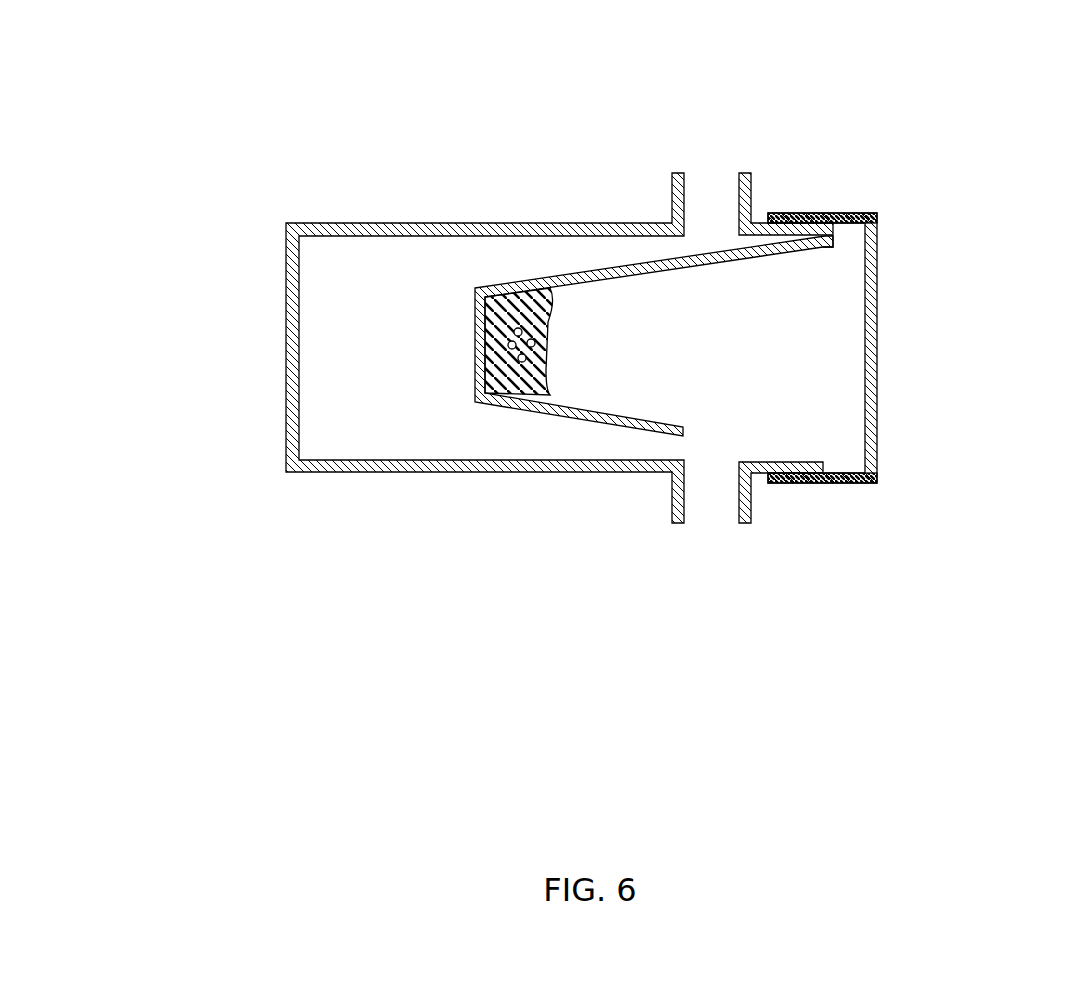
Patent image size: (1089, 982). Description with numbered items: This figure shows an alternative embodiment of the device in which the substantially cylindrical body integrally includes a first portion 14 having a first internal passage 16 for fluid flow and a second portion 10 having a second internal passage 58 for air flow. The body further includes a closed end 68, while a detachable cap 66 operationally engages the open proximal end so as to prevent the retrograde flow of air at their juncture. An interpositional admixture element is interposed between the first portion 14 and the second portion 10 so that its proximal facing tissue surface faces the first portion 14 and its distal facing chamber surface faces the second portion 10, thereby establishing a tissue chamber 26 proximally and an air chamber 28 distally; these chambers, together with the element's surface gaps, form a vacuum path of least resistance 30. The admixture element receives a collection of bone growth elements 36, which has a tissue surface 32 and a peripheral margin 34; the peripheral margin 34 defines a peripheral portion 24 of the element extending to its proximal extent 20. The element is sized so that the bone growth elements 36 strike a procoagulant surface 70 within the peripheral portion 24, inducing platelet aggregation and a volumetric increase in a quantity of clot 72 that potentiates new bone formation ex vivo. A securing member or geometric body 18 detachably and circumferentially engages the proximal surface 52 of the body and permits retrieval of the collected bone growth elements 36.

The second portion 10 is at (593, 329).
The first portion 14 is at (757, 500).
The first internal passage 16 is at (707, 488).
The securing member or geometric body 18 is at (770, 213).
The proximal extent 20 is at (836, 243).
The peripheral portion 24 is at (797, 258).
The tissue chamber 26 is at (430, 416).
The air chamber 28 is at (371, 358).
The vacuum path of least resistance 30 is at (597, 440).
The tissue surface 32 is at (552, 330).
The peripheral margin 34 is at (548, 402).
The collection of bone growth elements 36 is at (746, 358).
The proximal surface 52 is at (823, 213).
The second internal passage 58 is at (712, 186).
The detachable cap 66 is at (879, 410).
The closed end 68 is at (283, 330).
The procoagulant surface 70 is at (757, 265).
The quantity of clot 72 is at (517, 328).